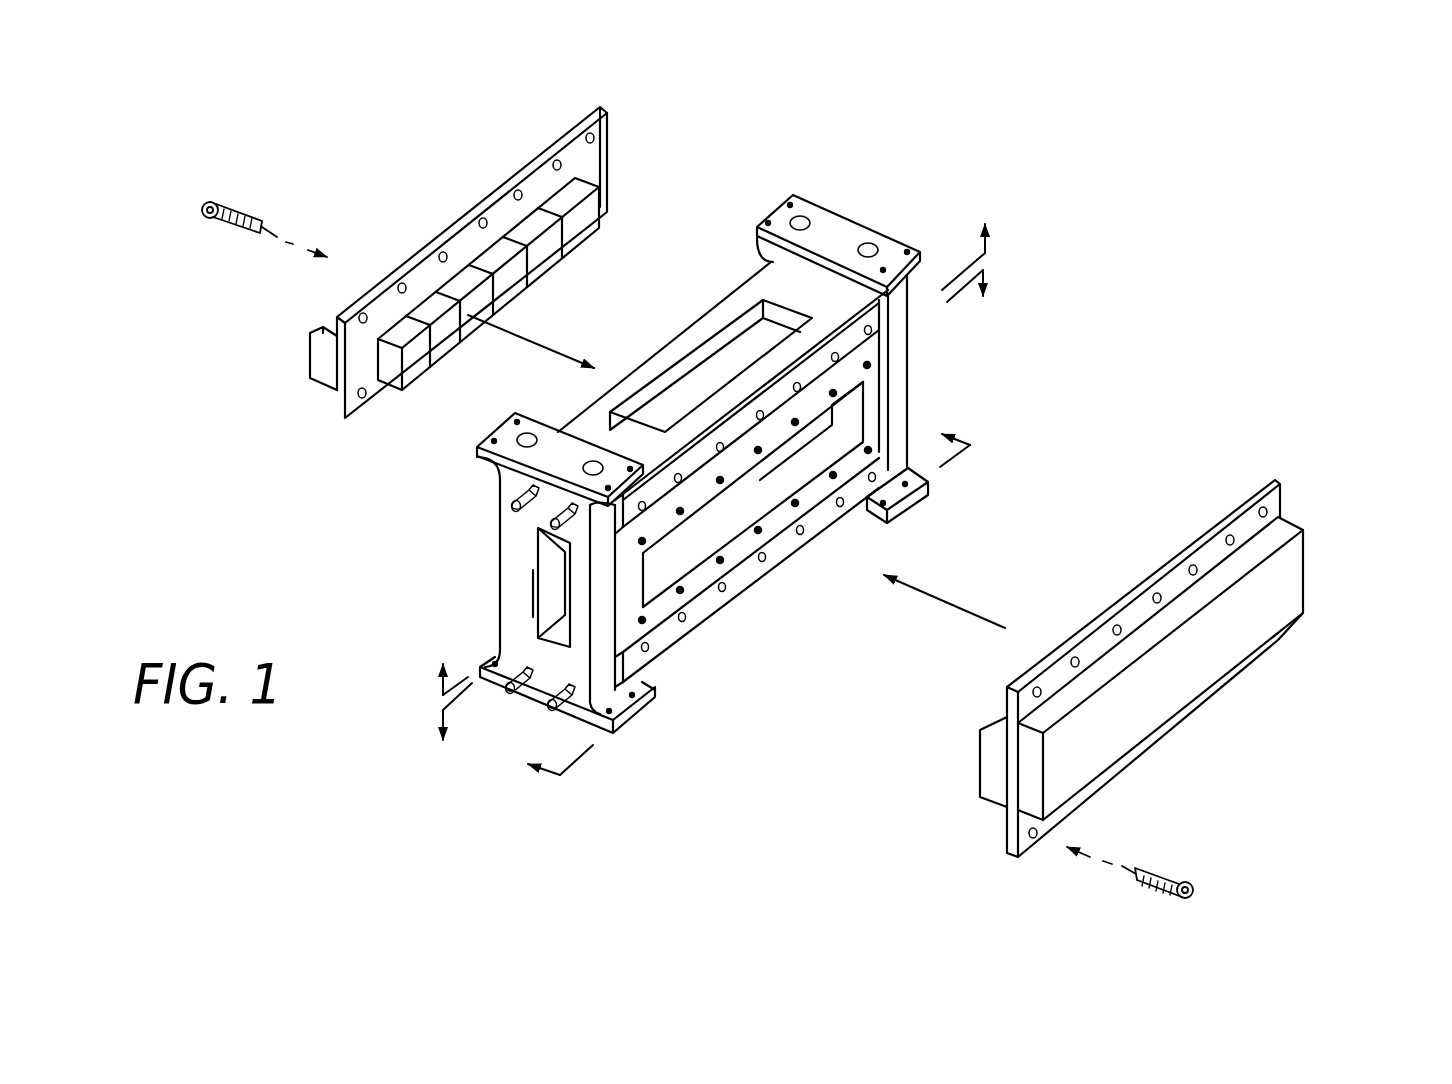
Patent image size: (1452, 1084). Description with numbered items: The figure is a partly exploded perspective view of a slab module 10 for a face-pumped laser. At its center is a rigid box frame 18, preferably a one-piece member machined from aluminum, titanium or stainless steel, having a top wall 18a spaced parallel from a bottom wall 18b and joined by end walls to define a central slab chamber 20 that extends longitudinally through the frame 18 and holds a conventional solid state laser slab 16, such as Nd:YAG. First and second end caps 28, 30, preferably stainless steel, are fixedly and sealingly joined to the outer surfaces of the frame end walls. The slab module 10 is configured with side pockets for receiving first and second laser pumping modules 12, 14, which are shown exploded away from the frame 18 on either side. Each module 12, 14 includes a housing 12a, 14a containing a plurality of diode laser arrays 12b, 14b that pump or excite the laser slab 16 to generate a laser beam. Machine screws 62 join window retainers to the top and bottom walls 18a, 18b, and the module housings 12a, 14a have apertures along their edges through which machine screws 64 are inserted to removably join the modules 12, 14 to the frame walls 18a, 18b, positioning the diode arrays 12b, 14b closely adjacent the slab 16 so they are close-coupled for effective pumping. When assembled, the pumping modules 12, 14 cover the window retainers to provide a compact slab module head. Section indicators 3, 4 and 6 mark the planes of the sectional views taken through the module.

The slab module 10 is at (846, 164).
The first laser pumping module 12 is at (1241, 490).
The housing 12a is at (1190, 688).
The diode laser arrays 12b is at (978, 757).
The second laser pumping module 14 is at (557, 126).
The housing 14a is at (310, 352).
The diode laser arrays 14b is at (437, 366).
The solid state laser slab 16 is at (547, 580).
The rigid box frame 18 is at (733, 284).
The top wall 18a is at (665, 348).
The bottom wall 18b is at (691, 621).
The central slab chamber 20 is at (742, 506).
The first end cap 28 is at (500, 606).
The second end cap 30 is at (910, 280).
The machine screws 62 is at (749, 560).
The machine screws 64 is at (290, 240).
The section line 3 is at (724, 516).
The section line 4 is at (733, 592).
The section line 6 is at (709, 450).